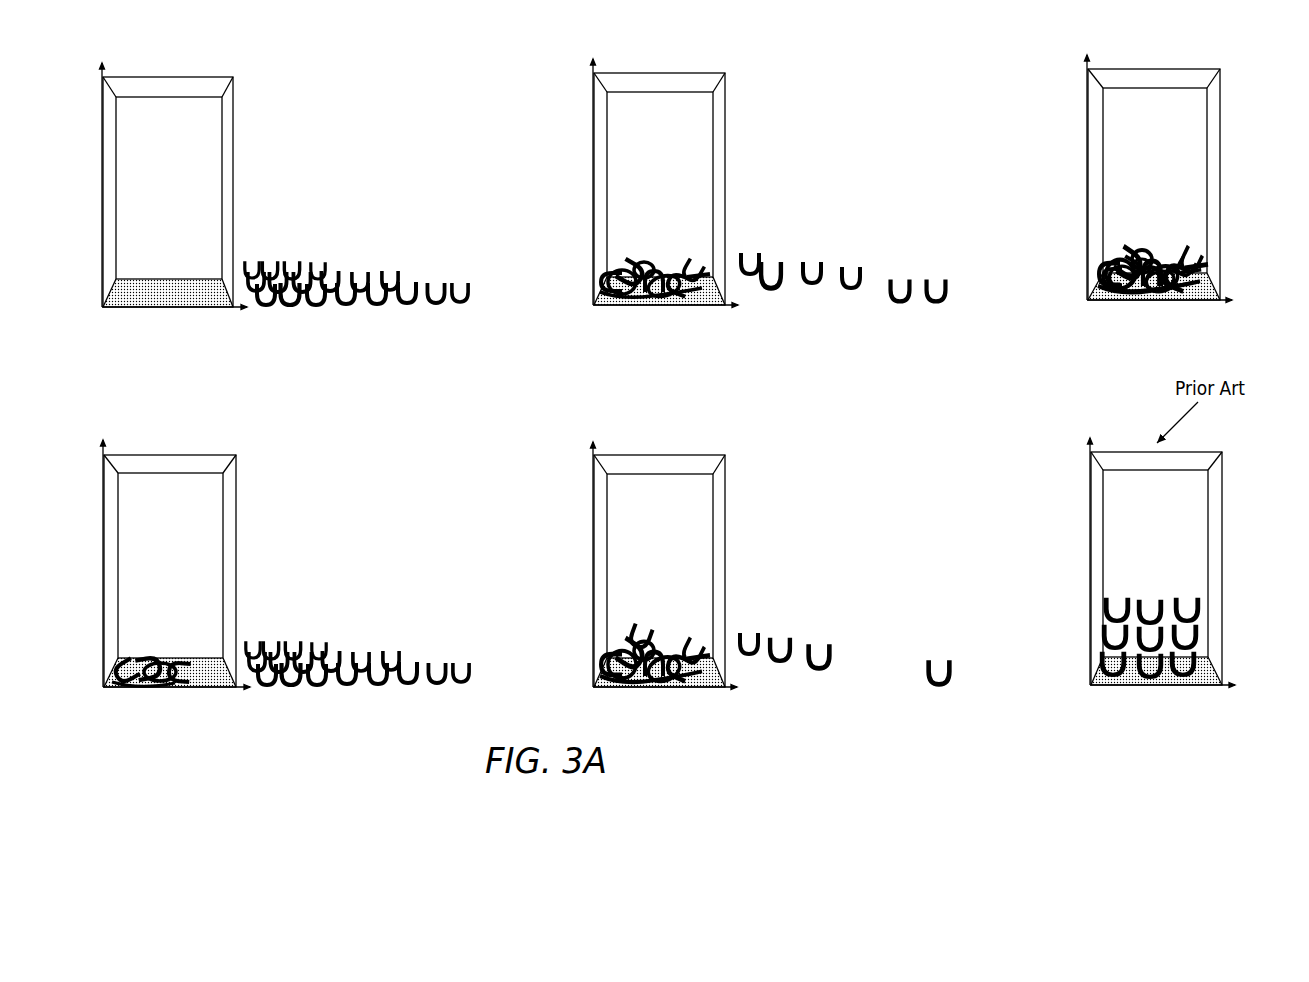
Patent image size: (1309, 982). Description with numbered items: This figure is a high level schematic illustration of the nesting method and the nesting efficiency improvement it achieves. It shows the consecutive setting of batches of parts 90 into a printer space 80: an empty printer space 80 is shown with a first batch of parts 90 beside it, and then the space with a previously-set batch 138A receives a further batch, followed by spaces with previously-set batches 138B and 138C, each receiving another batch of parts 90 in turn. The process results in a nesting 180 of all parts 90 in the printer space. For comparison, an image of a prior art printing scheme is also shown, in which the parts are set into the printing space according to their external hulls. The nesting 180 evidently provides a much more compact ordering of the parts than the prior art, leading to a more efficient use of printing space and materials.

The printer space 80 is at (251, 83).
The parts 90 is at (380, 268).
The space with previously-set batch 138A is at (252, 502).
The space with previously-set batches 138B is at (752, 93).
The space with previously-set batches 138C is at (755, 500).
The nesting 180 is at (1228, 88).